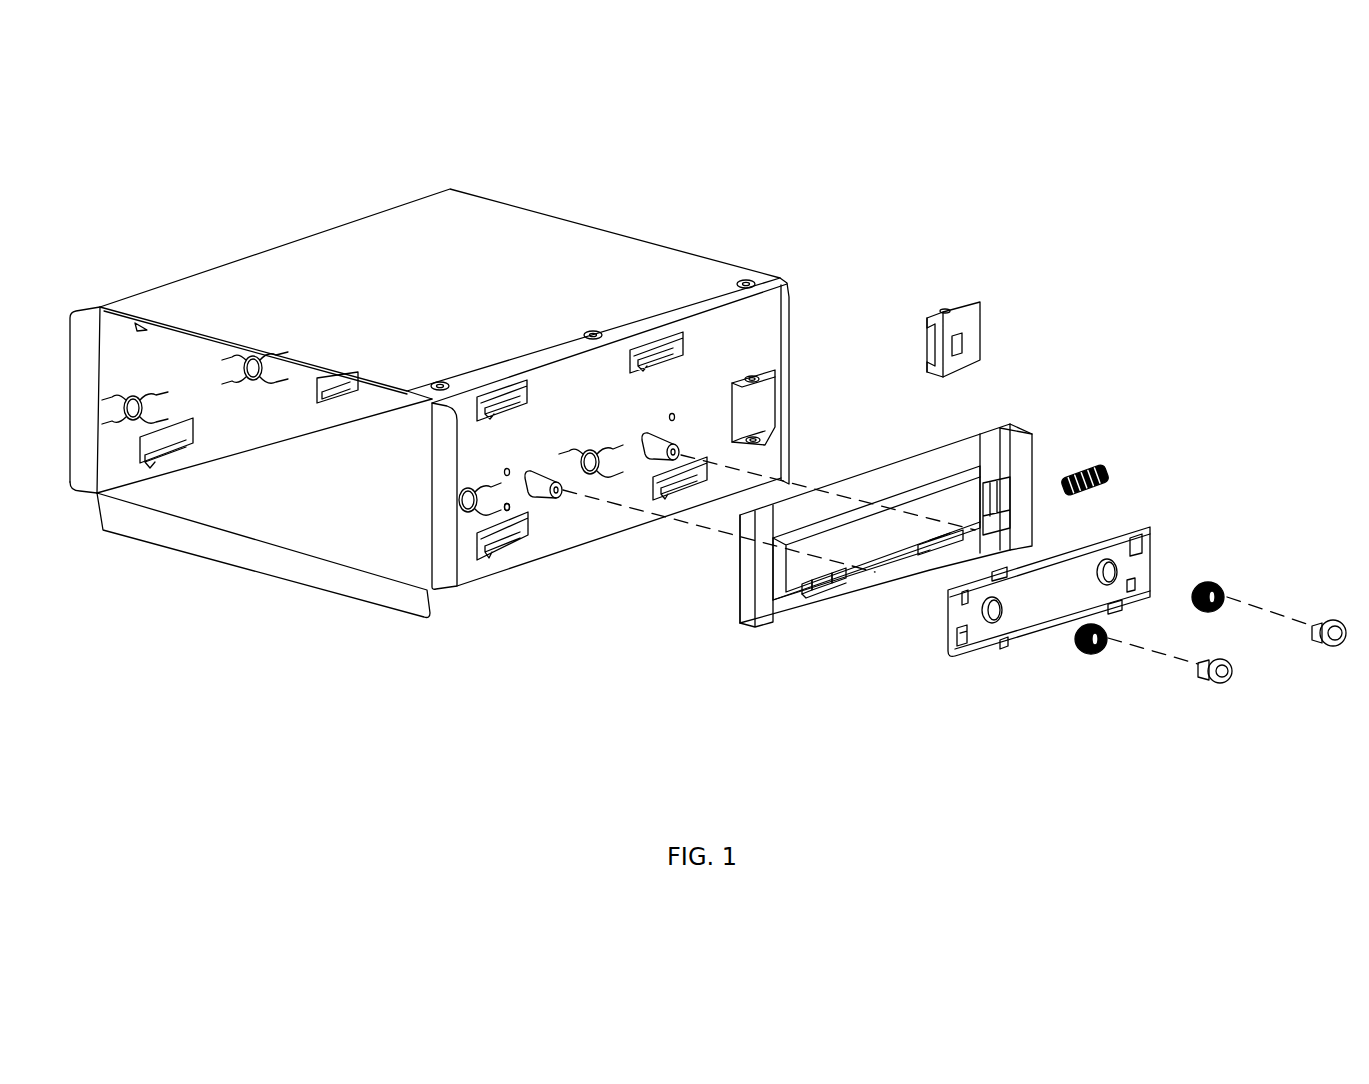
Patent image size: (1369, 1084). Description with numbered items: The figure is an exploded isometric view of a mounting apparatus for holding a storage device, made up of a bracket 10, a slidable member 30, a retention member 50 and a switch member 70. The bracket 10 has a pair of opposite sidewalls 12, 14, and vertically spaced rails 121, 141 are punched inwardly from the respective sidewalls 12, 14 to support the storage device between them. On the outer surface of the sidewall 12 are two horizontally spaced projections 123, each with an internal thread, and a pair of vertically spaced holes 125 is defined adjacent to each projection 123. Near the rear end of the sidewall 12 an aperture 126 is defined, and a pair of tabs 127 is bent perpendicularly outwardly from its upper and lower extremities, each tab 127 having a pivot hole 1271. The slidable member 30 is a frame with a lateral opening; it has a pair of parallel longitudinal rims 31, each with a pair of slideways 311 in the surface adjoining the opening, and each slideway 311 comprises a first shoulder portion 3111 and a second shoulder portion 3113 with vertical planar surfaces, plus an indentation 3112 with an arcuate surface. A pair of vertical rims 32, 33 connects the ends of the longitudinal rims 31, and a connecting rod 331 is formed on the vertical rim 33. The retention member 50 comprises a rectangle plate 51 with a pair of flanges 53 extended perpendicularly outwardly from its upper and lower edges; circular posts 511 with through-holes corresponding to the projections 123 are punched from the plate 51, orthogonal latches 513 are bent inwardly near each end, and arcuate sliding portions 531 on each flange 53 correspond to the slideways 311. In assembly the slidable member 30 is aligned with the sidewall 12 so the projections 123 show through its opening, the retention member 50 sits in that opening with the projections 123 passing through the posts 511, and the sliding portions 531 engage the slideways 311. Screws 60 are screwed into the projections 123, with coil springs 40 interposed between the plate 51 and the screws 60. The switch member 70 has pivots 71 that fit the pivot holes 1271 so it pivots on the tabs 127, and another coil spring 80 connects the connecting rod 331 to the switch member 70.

The bracket 10 is at (592, 213).
The sidewall 12 is at (763, 323).
The rail 121 is at (493, 545).
The projection 123 is at (542, 488).
The hole 125 is at (508, 512).
The aperture 126 is at (758, 407).
The tab 127 is at (760, 372).
The pivot hole 1271 is at (775, 421).
The sidewall 14 is at (115, 340).
The rail 141 is at (97, 493).
The slidable member 30 is at (1046, 448).
The longitudinal rim 31 is at (785, 613).
The slideway 311 is at (910, 727).
The first shoulder portion 3111 is at (815, 588).
The indentation 3112 is at (830, 588).
The second shoulder portion 3113 is at (848, 586).
The vertical rim 32 is at (752, 611).
The vertical rim 33 is at (1030, 447).
The connecting rod 331 is at (984, 485).
The coil spring 40 is at (1213, 583).
The retention member 50 is at (1160, 549).
The plate 51 is at (955, 612).
The post 511 is at (1103, 560).
The latch 513 is at (955, 655).
The flange 53 is at (980, 652).
The sliding portion 531 is at (1010, 643).
The screw 60 is at (1218, 688).
The switch member 70 is at (986, 334).
The pivot 71 is at (950, 310).
The coil spring 80 is at (1105, 473).